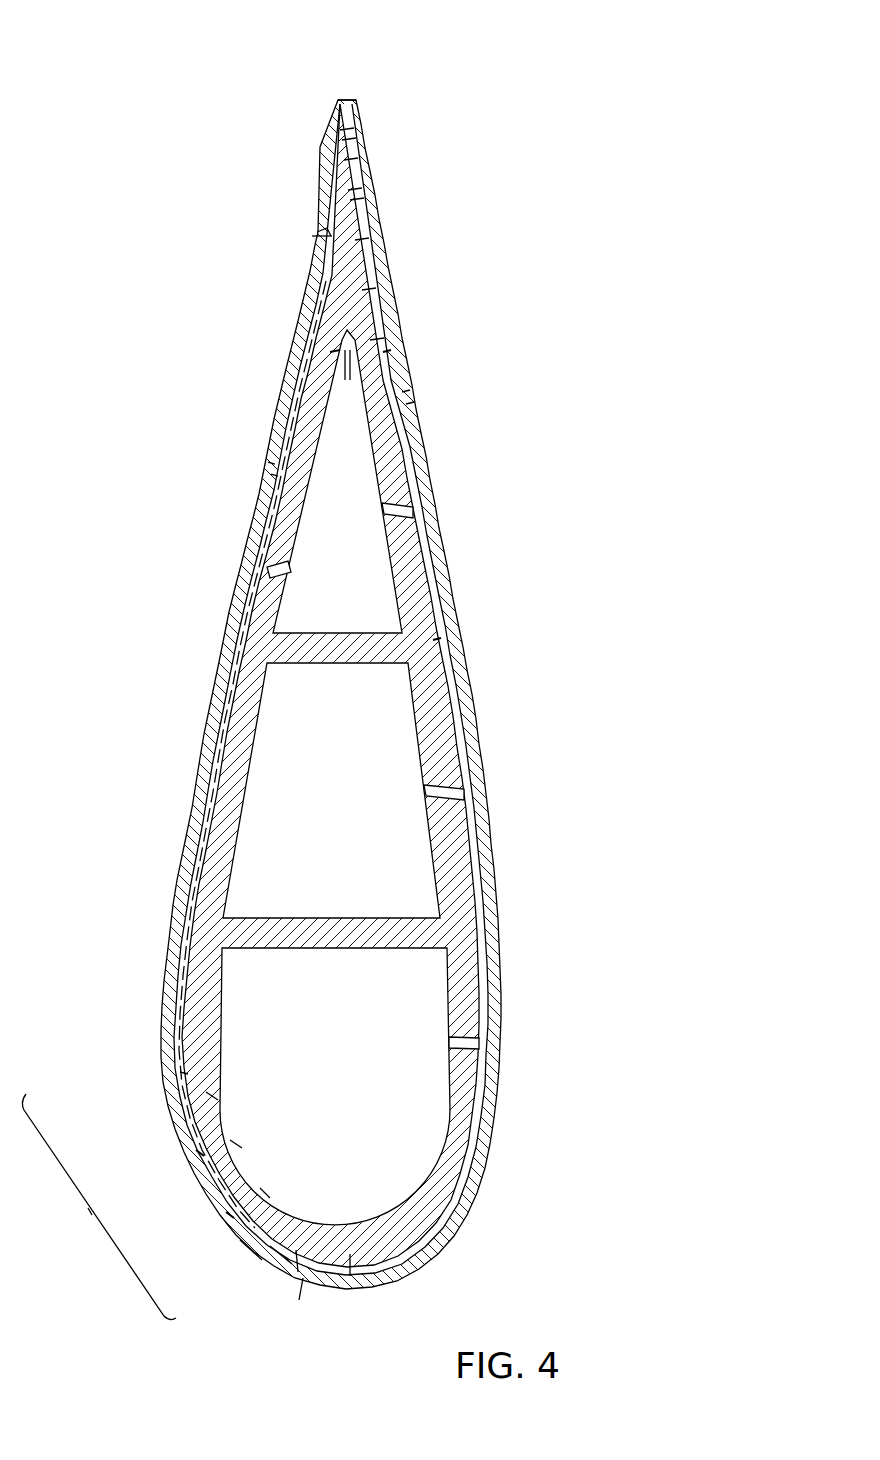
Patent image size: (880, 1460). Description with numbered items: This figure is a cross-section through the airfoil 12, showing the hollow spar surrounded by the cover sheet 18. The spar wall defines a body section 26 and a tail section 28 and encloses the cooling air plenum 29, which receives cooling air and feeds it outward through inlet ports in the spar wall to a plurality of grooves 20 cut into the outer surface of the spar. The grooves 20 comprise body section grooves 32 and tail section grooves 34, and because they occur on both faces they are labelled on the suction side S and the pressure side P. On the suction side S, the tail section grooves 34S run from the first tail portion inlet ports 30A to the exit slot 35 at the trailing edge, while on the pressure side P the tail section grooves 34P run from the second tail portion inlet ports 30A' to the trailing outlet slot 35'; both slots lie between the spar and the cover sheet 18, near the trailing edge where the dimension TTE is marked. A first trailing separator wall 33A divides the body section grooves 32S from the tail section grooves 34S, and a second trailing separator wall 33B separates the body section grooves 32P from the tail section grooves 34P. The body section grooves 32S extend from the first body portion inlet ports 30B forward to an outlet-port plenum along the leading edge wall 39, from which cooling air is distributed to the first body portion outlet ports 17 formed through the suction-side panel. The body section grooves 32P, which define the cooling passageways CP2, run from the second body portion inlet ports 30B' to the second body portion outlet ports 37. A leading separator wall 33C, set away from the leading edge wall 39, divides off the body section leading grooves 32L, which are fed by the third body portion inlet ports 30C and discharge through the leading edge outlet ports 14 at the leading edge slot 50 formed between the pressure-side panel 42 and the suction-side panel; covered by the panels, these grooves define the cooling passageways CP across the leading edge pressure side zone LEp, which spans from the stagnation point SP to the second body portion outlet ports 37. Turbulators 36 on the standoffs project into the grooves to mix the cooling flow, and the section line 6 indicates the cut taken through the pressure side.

The airfoil 12 is at (476, 100).
The leading edge outlet ports 14 is at (280, 1220).
The first body portion outlet ports 17 is at (345, 1285).
The cover sheet 18 is at (188, 1181).
The grooves 20 is at (386, 105).
The body section 26 is at (474, 866).
The tail section 28 is at (367, 302).
The cooling air plenum 29 is at (392, 770).
The first tail portion inlet ports 30A is at (425, 337).
The second tail portion inlet ports 30A' is at (298, 362).
The first body portion inlet ports 30B is at (458, 780).
The second body portion inlet ports 30B' is at (241, 579).
The third body portion inlet ports 30C is at (230, 1103).
The body section grooves 32 is at (440, 642).
The suction-side body section grooves 32S is at (457, 752).
The pressure-side body section grooves 32P is at (228, 745).
The body section leading grooves 32L is at (201, 1152).
The first trailing separator wall 33A is at (412, 397).
The second trailing separator wall 33B is at (272, 466).
The leading separator wall 33C is at (184, 1075).
The tail section grooves 34 is at (372, 242).
The pressure-side tail section grooves 34P is at (320, 292).
The suction-side tail section grooves 34S is at (385, 325).
The exit slot 35 is at (380, 124).
The trailing outlet slot 35' is at (304, 203).
The turbulator 36 is at (370, 163).
The second body portion outlet ports 37 is at (152, 1049).
The leading edge wall 39 is at (282, 1254).
The pressure-side panel 42 is at (184, 863).
The leading edge slot 50 is at (252, 1252).
The section line 6- 6 is at (312, 236).
The pressure side P is at (128, 907).
The suction side S is at (522, 1020).
The trailing edge thickness TTE is at (318, 110).
The cooling passageways CP is at (232, 1216).
The cooling passageways CP2 is at (234, 668).
The stagnation point SP is at (210, 1232).
The leading edge pressure side zone LEp is at (99, 1207).